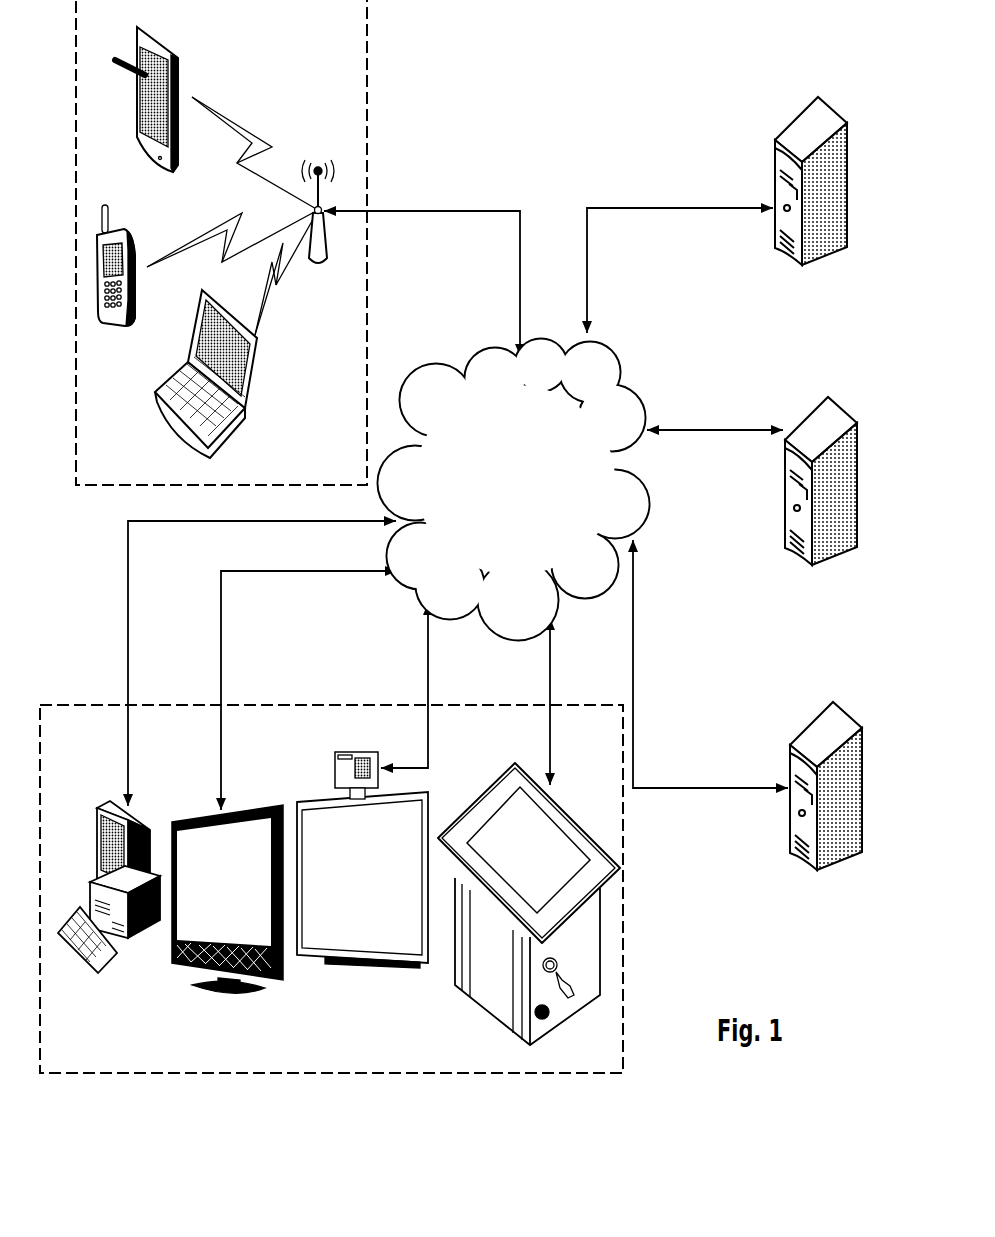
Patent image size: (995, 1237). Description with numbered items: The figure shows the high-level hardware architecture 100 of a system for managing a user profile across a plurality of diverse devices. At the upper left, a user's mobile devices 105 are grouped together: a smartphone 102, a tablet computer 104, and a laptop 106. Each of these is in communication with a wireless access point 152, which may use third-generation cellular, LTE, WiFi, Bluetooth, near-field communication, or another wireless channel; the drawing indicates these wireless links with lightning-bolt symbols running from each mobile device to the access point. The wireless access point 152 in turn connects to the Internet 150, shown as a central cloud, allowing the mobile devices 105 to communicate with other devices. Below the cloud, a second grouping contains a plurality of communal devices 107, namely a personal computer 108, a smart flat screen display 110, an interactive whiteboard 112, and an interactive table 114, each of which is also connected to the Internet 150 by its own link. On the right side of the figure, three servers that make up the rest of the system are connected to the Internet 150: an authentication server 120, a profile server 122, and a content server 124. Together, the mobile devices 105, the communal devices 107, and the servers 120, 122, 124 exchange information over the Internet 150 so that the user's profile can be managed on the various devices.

The hardware architecture 100 is at (599, 76).
The smartphone 102 is at (116, 284).
The tablet computer 104 is at (146, 116).
The mobile device 105 is at (308, 46).
The laptop 106 is at (206, 384).
The communal devices 107 is at (51, 756).
The personal computer 108 is at (109, 906).
The smart flat screen display 110 is at (227, 919).
The interactive whiteboard 112 is at (362, 876).
The interactive table 114 is at (529, 907).
The authentication server 120 is at (811, 200).
The profile server 122 is at (821, 501).
The content server 124 is at (826, 805).
The Internet 150 is at (498, 533).
The wireless access point 152 is at (240, 216).